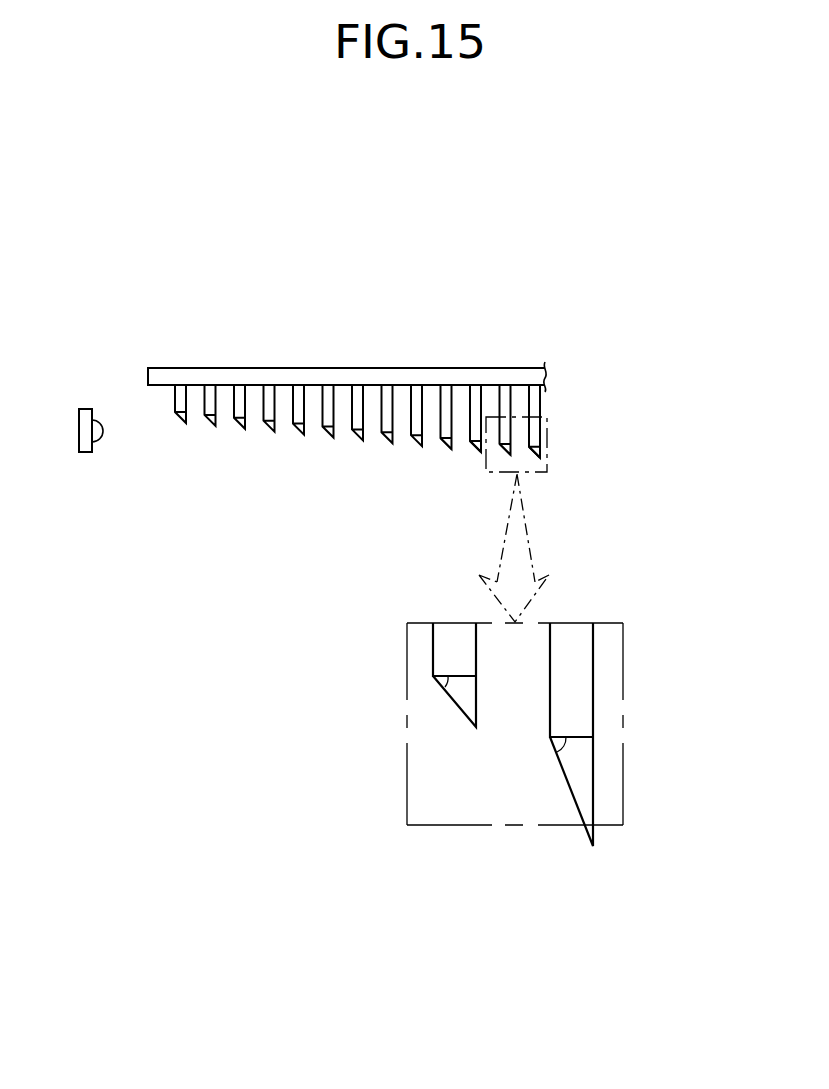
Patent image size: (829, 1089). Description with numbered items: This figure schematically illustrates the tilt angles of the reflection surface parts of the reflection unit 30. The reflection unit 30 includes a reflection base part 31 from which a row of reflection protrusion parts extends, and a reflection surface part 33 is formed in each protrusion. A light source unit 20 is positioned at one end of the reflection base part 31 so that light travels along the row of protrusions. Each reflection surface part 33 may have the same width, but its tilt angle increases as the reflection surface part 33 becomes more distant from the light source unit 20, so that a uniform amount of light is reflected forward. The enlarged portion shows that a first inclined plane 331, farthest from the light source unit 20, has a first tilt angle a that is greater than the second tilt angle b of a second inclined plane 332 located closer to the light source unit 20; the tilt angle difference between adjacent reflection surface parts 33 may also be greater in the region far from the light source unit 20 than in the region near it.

The light source unit 20 is at (87, 453).
The reflection unit 30 is at (347, 344).
The reflection base part 31 is at (407, 373).
The reflection surface part 33 is at (446, 442).
The first inclined plane 331 is at (572, 793).
The second inclined plane 332 is at (460, 710).